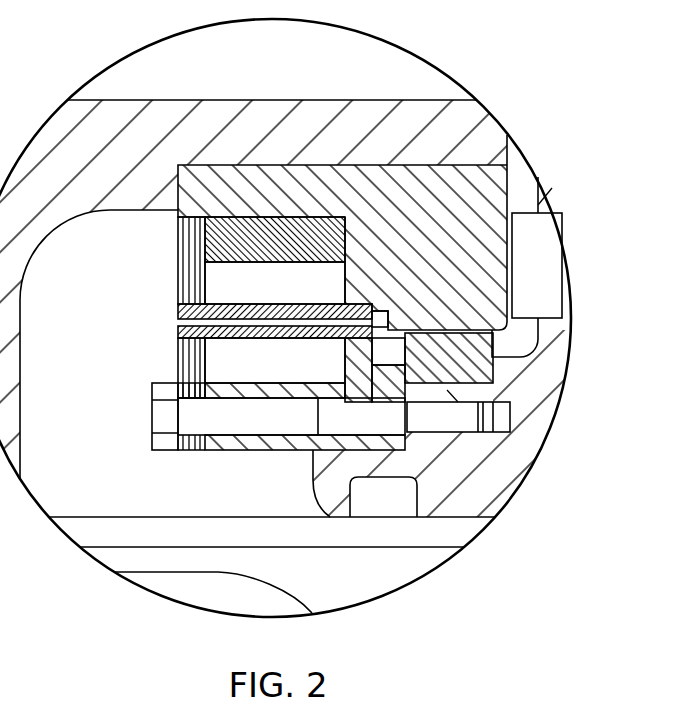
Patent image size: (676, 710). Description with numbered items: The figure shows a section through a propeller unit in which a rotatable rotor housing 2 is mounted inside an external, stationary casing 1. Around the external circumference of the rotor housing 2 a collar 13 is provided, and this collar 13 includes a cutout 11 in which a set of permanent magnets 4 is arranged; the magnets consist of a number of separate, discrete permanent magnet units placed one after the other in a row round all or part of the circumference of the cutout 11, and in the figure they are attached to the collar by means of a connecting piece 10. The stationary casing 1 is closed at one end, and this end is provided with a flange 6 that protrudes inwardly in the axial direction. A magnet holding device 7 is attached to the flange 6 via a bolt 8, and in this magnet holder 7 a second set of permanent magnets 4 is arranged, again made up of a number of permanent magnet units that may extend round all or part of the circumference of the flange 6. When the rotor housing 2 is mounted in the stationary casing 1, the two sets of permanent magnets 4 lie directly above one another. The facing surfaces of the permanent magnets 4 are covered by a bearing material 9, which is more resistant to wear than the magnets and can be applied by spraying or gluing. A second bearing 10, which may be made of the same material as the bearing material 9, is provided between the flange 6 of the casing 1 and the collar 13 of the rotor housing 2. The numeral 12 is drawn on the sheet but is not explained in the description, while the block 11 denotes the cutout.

The external stationary casing 1 is at (488, 137).
The rotatable rotor housing 2 is at (478, 447).
The permanent magnets 4 is at (215, 283).
The flange 6 is at (442, 442).
The magnet holding device 7 is at (382, 380).
The bolt 8 is at (163, 417).
The bearing material 9 is at (373, 333).
The connecting piece 10 is at (493, 371).
The cutout 11 is at (313, 233).
The yoke top portion 12 is at (240, 182).
The collar 13 is at (478, 195).